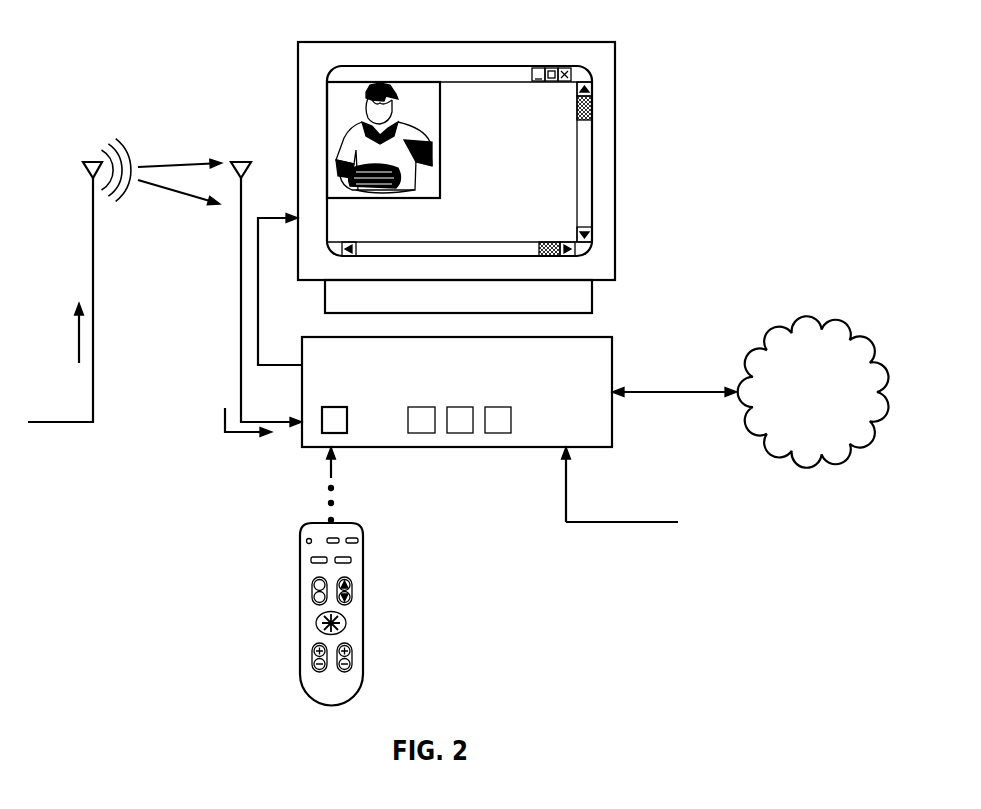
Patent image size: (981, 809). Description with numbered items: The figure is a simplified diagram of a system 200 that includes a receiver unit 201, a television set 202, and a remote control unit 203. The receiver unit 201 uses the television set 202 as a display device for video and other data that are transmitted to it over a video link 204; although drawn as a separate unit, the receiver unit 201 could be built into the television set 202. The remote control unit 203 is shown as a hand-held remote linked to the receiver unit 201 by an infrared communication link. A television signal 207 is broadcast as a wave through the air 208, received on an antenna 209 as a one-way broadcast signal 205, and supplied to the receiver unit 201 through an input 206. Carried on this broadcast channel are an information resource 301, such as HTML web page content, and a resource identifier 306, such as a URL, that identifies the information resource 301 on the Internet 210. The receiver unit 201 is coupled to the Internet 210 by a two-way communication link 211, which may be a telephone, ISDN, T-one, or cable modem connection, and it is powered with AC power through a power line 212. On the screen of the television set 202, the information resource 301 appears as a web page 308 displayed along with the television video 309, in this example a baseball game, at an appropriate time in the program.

The system 200 is at (684, 84).
The receiver unit 201 is at (599, 434).
The television set 202 is at (615, 147).
The remote control unit 203 is at (363, 567).
The video link 204 is at (258, 333).
The one-way broadcast signal 205 is at (245, 436).
The input 206 is at (298, 428).
The television signal 207 is at (79, 343).
The air 208 is at (112, 143).
The antenna 209 is at (244, 198).
The Internet 210 is at (827, 416).
The two-way communication link 211 is at (679, 423).
The power line 212 is at (644, 552).
The information resource 301 is at (177, 197).
The resource identifier 306 is at (180, 166).
The web page 308 is at (526, 180).
The television video 309 is at (336, 109).